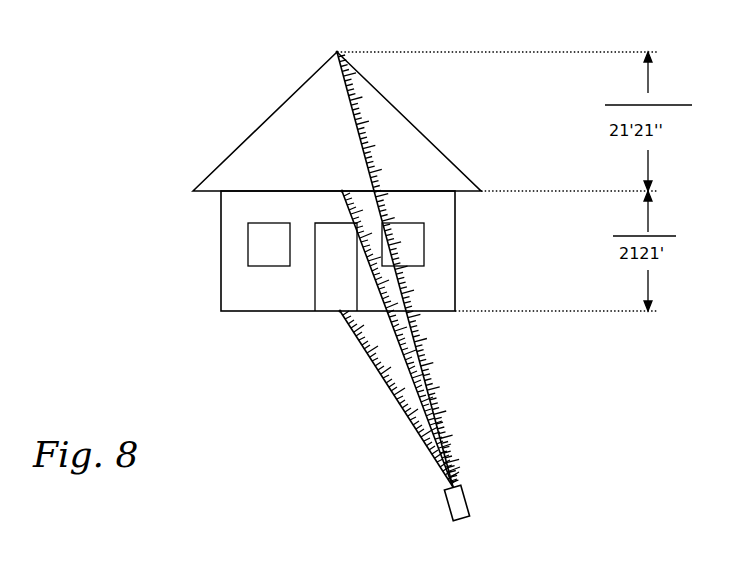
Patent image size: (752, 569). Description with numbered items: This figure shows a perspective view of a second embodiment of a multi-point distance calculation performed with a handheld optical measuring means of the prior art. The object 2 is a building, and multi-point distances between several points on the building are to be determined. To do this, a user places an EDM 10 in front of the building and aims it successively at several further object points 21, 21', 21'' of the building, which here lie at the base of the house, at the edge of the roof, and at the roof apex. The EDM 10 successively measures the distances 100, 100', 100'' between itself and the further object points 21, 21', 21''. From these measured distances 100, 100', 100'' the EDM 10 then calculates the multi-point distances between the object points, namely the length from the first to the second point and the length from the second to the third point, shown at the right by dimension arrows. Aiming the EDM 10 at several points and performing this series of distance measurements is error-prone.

The object 2 is at (221, 246).
The further object point 21 is at (289, 326).
The further object point 21' is at (287, 174).
The further object point 21'' is at (273, 39).
The EDM 10 is at (455, 507).
The distance 100 is at (426, 399).
The distance 100' is at (429, 339).
The distance 100'' is at (429, 269).